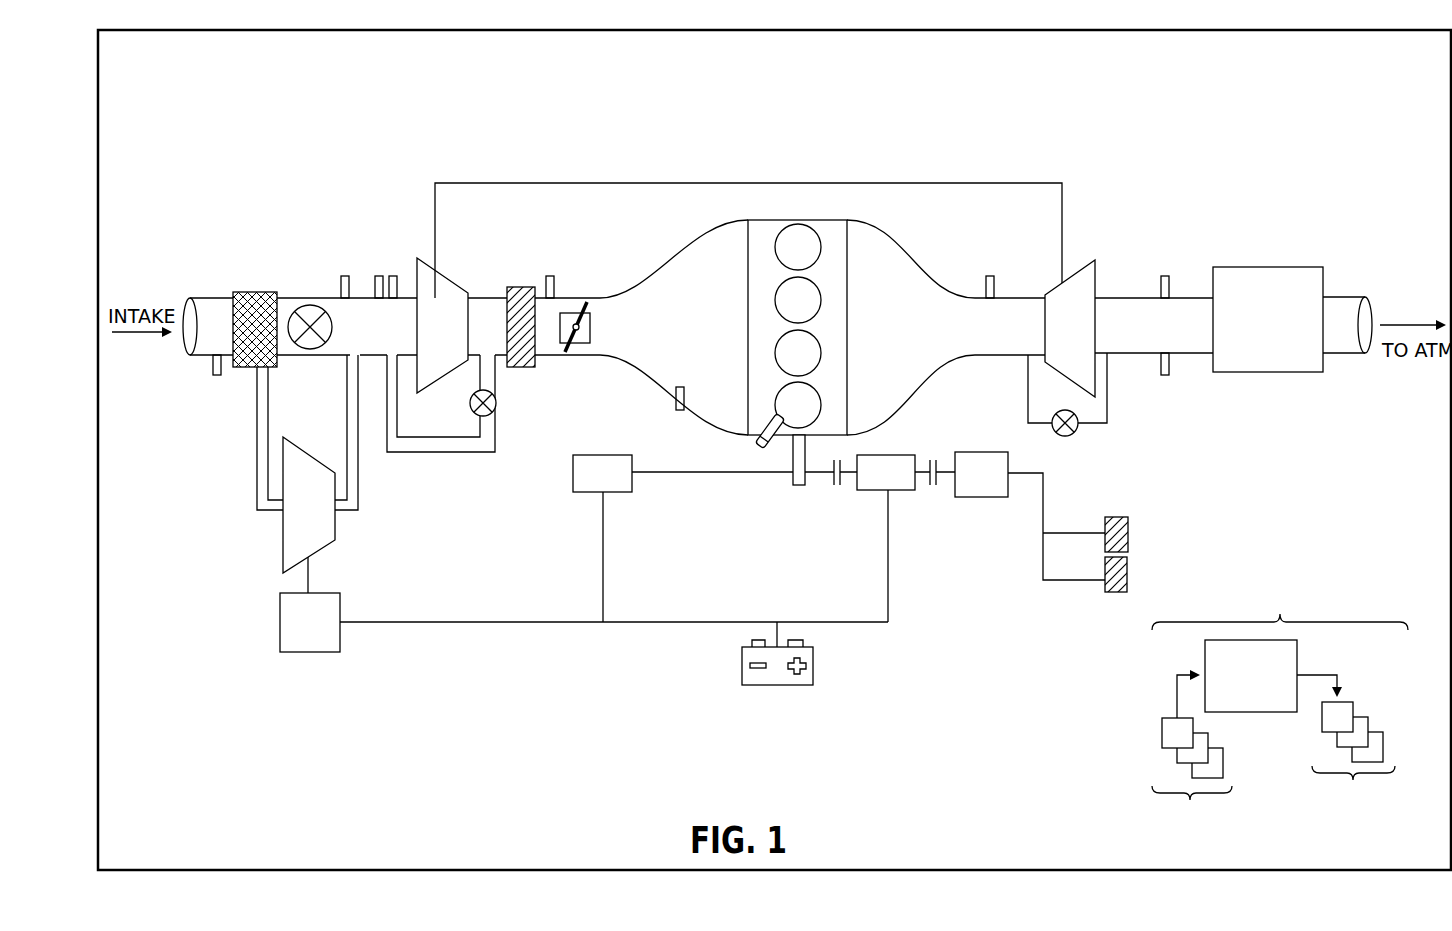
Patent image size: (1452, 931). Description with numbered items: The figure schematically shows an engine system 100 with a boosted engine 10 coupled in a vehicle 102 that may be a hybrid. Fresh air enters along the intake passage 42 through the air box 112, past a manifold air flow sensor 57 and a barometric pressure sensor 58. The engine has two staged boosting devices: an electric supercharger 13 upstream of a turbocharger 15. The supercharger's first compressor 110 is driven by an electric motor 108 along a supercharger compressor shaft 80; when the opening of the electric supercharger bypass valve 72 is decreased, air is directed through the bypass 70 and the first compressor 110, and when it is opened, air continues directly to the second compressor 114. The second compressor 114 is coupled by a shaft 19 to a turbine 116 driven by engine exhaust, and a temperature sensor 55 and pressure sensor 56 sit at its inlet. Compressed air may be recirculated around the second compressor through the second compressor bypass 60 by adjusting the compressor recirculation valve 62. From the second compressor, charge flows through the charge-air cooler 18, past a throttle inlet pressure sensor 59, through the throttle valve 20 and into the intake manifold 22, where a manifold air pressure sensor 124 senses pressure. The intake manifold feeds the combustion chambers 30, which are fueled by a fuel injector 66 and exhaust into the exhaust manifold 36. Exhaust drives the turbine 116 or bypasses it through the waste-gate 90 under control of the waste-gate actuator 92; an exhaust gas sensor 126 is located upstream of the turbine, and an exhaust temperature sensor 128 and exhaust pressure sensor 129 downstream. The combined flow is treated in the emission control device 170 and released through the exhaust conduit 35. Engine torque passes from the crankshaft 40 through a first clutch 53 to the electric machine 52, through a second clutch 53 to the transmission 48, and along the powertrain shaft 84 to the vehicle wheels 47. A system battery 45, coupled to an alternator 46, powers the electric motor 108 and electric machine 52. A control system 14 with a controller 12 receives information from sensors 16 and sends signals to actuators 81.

The engine 10 is at (848, 308).
The controller 12 is at (1251, 676).
The electric supercharger 13 is at (247, 577).
The control system 14 is at (1280, 705).
The turbocharger 15 is at (489, 221).
The sensors 16 is at (1192, 760).
The charge-air cooler 18 is at (519, 287).
The shaft 19 is at (960, 183).
The throttle valve 20 is at (590, 338).
The intake manifold 22 is at (674, 327).
The combustion chambers 30 is at (820, 243).
The exhaust conduit 35 is at (1347, 297).
The exhaust manifold 36 is at (946, 327).
The crankshaft 40 is at (793, 480).
The intake passage 42 is at (203, 358).
The system battery 45 is at (782, 686).
The alternator 46 is at (573, 490).
The vehicle wheels 47 is at (1105, 519).
The transmission 48 is at (981, 474).
The electric machine 52 is at (870, 490).
The clutches 53 is at (835, 485).
The temperature sensor 55 is at (379, 276).
The pressure sensor 56 is at (393, 276).
The manifold air flow sensor 57 is at (345, 276).
The barometric pressure sensor 58 is at (218, 378).
The throttle inlet pressure sensor 59 is at (550, 276).
The second compressor bypass 60 is at (455, 437).
The compressor recirculation valve 62 is at (496, 412).
The fuel injector 66 is at (760, 446).
The bypass 70 is at (257, 488).
The electric supercharger bypass valve 72 is at (310, 305).
The supercharger compressor shaft 80 is at (312, 560).
The actuators 81 is at (1346, 750).
The powertrain shaft 84 is at (1018, 474).
The waste-gate 90 is at (1028, 404).
The waste-gate actuator 92 is at (1069, 436).
The engine system 100 is at (1112, 186).
The vehicle 102 is at (1368, 32).
The electric motor 108 is at (310, 622).
The first compressor 110 is at (309, 505).
The air box 112 is at (243, 291).
The second compressor 114 is at (442, 325).
The turbine 116 is at (1070, 328).
The manifold air pressure sensor 124 is at (676, 395).
The exhaust gas sensor 126 is at (990, 276).
The exhaust temperature sensor 128 is at (1165, 375).
The exhaust pressure sensor 129 is at (1165, 276).
The emission control device 170 is at (1257, 267).